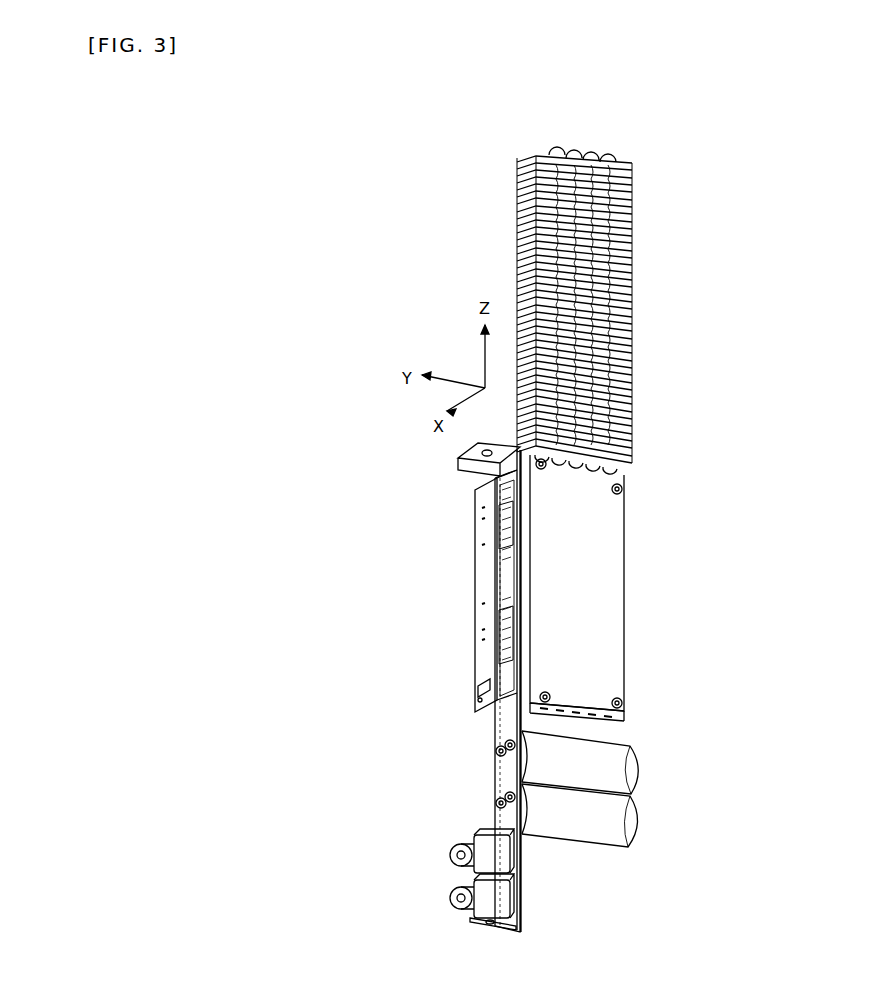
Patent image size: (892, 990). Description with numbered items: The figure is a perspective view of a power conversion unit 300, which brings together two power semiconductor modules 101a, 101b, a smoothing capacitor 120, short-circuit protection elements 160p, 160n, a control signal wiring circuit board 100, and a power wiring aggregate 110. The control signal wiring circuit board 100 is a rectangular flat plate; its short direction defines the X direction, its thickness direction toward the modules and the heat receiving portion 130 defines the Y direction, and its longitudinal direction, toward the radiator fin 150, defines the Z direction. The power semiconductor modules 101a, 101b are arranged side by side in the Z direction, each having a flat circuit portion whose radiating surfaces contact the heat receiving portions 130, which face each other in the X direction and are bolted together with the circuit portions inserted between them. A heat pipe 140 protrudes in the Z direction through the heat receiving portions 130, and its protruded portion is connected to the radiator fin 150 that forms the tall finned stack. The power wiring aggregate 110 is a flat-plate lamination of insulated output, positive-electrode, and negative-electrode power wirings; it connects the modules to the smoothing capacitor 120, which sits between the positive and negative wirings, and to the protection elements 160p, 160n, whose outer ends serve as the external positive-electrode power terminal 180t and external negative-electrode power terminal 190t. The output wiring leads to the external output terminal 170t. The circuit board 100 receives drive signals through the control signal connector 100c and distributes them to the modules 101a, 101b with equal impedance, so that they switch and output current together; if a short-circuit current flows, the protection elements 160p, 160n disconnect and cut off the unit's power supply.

The power conversion unit 300 is at (465, 162).
The heat pipe 140 is at (617, 153).
The radiator fin 150 is at (632, 332).
The heat receiving portion 130 is at (614, 680).
The power wiring aggregate 110 is at (500, 778).
The external output terminal 170t is at (458, 457).
The control signal wiring circuit board 100 is at (484, 578).
The power semiconductor module 101a is at (500, 652).
The power semiconductor module 101b is at (500, 522).
The control signal connector 100c is at (478, 692).
The smoothing capacitor 120 is at (638, 824).
The positive-electrode side short-circuit protection element 160p is at (498, 856).
The negative-electrode side short-circuit protection element 160n is at (498, 900).
The external positive-electrode power terminal 180t is at (450, 854).
The external negative-electrode power terminal 190t is at (450, 897).